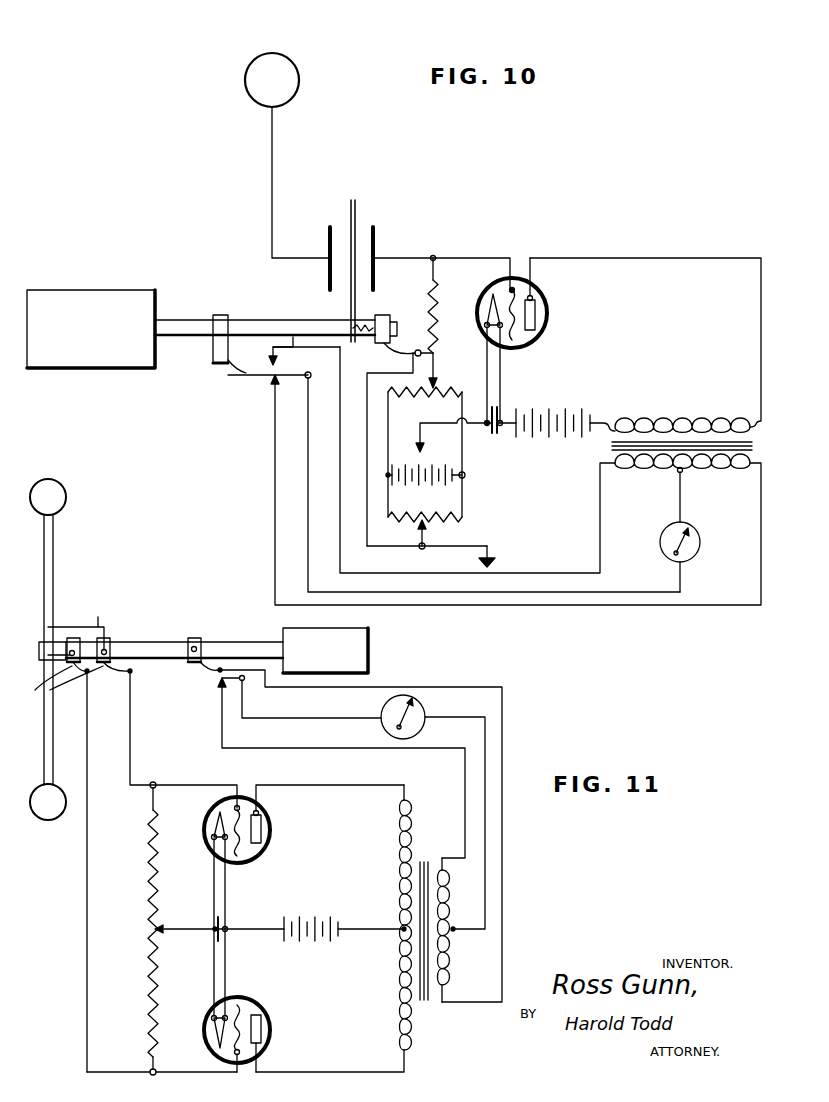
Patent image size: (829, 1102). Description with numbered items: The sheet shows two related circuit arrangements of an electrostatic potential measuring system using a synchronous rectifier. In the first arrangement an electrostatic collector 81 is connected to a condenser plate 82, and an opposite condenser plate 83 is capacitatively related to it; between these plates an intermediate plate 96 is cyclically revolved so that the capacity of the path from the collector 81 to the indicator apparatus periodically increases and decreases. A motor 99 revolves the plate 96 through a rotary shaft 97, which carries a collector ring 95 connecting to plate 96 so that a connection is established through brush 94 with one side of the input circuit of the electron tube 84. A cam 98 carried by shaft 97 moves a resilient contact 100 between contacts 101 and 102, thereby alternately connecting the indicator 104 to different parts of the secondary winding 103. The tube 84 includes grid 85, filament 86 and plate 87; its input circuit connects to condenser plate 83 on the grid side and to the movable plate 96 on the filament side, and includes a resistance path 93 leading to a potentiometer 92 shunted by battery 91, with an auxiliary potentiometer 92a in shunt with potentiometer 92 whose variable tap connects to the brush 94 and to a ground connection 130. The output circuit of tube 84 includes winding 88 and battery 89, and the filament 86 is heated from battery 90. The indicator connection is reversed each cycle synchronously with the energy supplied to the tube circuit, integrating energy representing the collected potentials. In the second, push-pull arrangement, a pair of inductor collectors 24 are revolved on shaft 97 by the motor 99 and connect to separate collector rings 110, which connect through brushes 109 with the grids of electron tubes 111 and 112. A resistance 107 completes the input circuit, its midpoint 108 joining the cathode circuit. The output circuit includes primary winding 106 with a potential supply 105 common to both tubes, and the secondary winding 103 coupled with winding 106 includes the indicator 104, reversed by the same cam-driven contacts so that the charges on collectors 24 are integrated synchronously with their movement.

In FIG. 10, the electrostatic collector 81 is at (247, 82).
In FIG. 10, the condenser plate 82 is at (329, 243).
In FIG. 10, the opposite condenser plate 83 is at (379, 234).
In FIG. 10, the electron tube 84 is at (516, 278).
In FIG. 10, the grid 85 is at (512, 287).
In FIG. 10, the filament 86 is at (503, 336).
In FIG. 10, the plate 87 is at (537, 318).
In FIG. 10, the winding 88 is at (677, 416).
In FIG. 10, the battery 89 is at (562, 411).
In FIG. 10, the battery 90 is at (492, 442).
In FIG. 10, the battery 91 is at (428, 489).
In FIG. 10, the potentiometer 92 is at (432, 400).
In FIG. 10, the auxiliary potentiometer 92a is at (445, 523).
In FIG. 10, the resistance path 93 is at (440, 278).
In FIG. 10, the brush 94 is at (442, 381).
In FIG. 10, the collector ring 95 is at (386, 311).
In FIG. 10, the intermediate plate 96 is at (345, 307).
In FIG. 10, the rotary shaft 97 is at (188, 323).
In FIG. 11, the rotary shaft 97 is at (137, 646).
In FIG. 10, the cam 98 is at (218, 352).
In FIG. 11, the cam 98 is at (197, 637).
In FIG. 10, the motor 99 is at (98, 303).
In FIG. 11, the motor 99 is at (362, 644).
In FIG. 10, the resilient contact 100 is at (240, 376).
In FIG. 11, the resilient contact 100 is at (215, 672).
In FIG. 10, the contact 101 is at (293, 345).
In FIG. 11, the contact 101 is at (225, 667).
In FIG. 10, the contact 102 is at (268, 388).
In FIG. 11, the contact 102 is at (215, 691).
In FIG. 10, the secondary winding 103 is at (689, 475).
In FIG. 11, the secondary winding 103 is at (458, 901).
In FIG. 10, the indicator 104 is at (701, 547).
In FIG. 11, the indicator 104 is at (428, 718).
In FIG. 10, the ground connection 130 is at (498, 562).
In FIG. 11, the inductor collectors 24 is at (54, 499).
In FIG. 11, the potential supply 105 is at (310, 925).
In FIG. 11, the primary winding 106 is at (392, 996).
In FIG. 11, the resistance 107 is at (148, 905).
In FIG. 11, the midpoint 108 is at (160, 935).
In FIG. 11, the brushes 109 is at (120, 867).
In FIG. 11, the collector rings 110 is at (76, 637).
In FIG. 11, the electron tube 111 is at (274, 828).
In FIG. 11, the electron tube 112 is at (268, 1008).